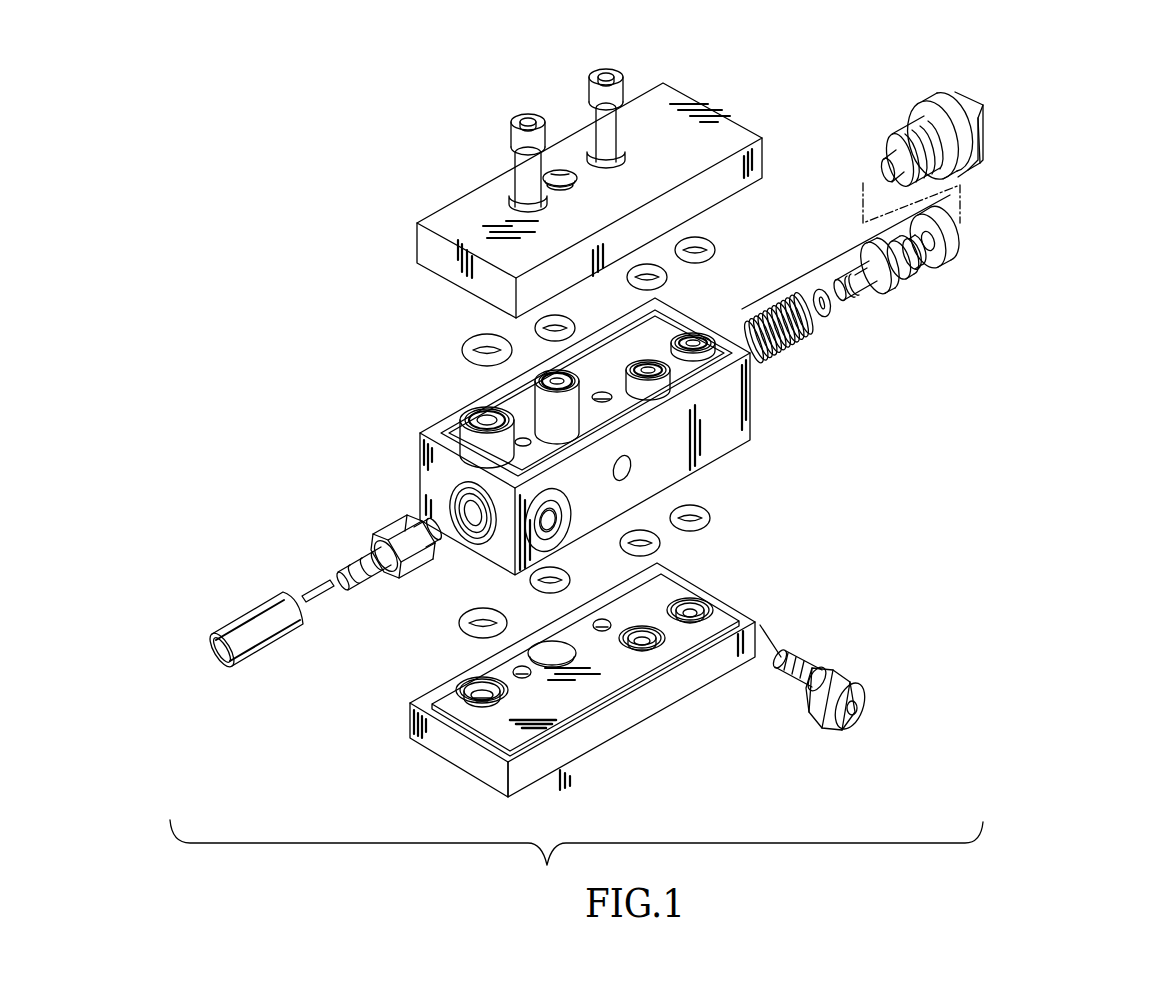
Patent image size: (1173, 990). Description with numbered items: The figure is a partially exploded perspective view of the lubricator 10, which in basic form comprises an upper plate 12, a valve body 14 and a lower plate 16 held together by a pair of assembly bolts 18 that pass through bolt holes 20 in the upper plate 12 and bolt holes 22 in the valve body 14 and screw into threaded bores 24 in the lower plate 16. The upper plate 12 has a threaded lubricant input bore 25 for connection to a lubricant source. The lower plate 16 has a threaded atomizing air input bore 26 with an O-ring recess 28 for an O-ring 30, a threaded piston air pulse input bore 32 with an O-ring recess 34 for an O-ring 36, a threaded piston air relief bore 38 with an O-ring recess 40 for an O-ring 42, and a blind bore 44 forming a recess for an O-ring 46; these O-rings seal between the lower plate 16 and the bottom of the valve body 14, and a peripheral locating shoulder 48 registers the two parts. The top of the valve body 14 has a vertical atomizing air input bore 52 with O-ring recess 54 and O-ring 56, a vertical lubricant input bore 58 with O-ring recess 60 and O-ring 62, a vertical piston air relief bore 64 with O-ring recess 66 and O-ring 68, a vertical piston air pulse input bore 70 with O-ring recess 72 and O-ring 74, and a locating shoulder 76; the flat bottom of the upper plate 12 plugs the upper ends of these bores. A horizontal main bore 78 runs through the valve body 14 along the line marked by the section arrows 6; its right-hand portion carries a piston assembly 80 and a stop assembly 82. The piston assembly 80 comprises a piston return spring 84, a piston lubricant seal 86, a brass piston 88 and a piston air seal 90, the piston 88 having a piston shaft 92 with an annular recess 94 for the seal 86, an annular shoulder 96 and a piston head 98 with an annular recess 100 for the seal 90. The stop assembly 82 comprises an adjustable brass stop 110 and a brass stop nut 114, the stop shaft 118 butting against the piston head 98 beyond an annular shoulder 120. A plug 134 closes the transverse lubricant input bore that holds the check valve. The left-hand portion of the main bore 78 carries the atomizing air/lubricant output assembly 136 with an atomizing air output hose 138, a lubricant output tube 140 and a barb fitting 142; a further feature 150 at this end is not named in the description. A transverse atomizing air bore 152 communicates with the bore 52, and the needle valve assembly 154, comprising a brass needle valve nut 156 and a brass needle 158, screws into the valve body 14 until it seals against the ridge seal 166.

The section line 6 is at (212, 655).
The lubricator 10 is at (403, 190).
The upper plate 12 is at (430, 239).
The valve body 14 is at (425, 462).
The lower plate 16 is at (440, 750).
The assembly bolts 18 is at (545, 134).
The bolt holes 20 is at (512, 196).
The bolt holes 22 is at (601, 391).
The threaded bores 24 is at (523, 679).
The threaded lubricant input bore 25 is at (569, 186).
The threaded atomizing air input bore 26 is at (481, 703).
The O-ring recess 28 is at (475, 679).
The O-ring 30 is at (459, 624).
The threaded piston air pulse input bore 32 is at (690, 620).
The O-ring recess 34 is at (703, 603).
The O-ring 36 is at (711, 520).
The threaded piston air relief bore 38 is at (646, 650).
The O-ring recess 40 is at (653, 629).
The O-ring 42 is at (661, 547).
The blind bore 44 is at (560, 658).
The O-ring 46 is at (548, 594).
The peripheral locating shoulder 48 is at (530, 747).
The vertical atomizing air input bore 52 is at (460, 421).
The O-ring recess 54 is at (470, 413).
The O-ring 56 is at (471, 338).
The vertical lubricant input bore 58 is at (564, 376).
The O-ring recess 60 is at (547, 375).
The O-ring 62 is at (553, 315).
The vertical piston air relief bore 64 is at (648, 380).
The O-ring recess 66 is at (642, 364).
The O-ring 68 is at (666, 281).
The vertical piston air pulse input bore 70 is at (695, 352).
The O-ring recess 72 is at (700, 334).
The O-ring 74 is at (706, 258).
The locating shoulder 76 is at (752, 388).
The main bore 78 is at (462, 508).
The piston assembly 80 is at (842, 252).
The stop assembly 82 is at (940, 52).
The piston return spring 84 is at (791, 343).
The piston lubricant seal 86 is at (824, 318).
The brass piston 88 is at (857, 235).
The piston air seal 90 is at (945, 256).
The piston shaft 92 is at (868, 292).
The annular recess 94 is at (853, 295).
The annular shoulder 96 is at (889, 290).
The piston head 98 is at (921, 262).
The annular recess 100 is at (910, 272).
The adjustable brass stop 110 is at (872, 150).
The brass stop nut 114 is at (948, 100).
The stop shaft 118 is at (882, 174).
The annular shoulder 120 is at (895, 153).
The plug 134 is at (631, 472).
The atomizing air/lubricant output assembly 136 is at (318, 487).
The atomizing air output hose 138 is at (285, 637).
The lubricant output tube 140 is at (316, 600).
The barb fitting 142 is at (385, 530).
The bore ring 150 is at (470, 528).
The transverse atomizing air bore 152 is at (575, 528).
The atomizing air needle valve assembly 154 is at (782, 635).
The brass needle valve nut 156 is at (826, 722).
The brass needle 158 is at (786, 672).
The ridge seal 166 is at (552, 540).